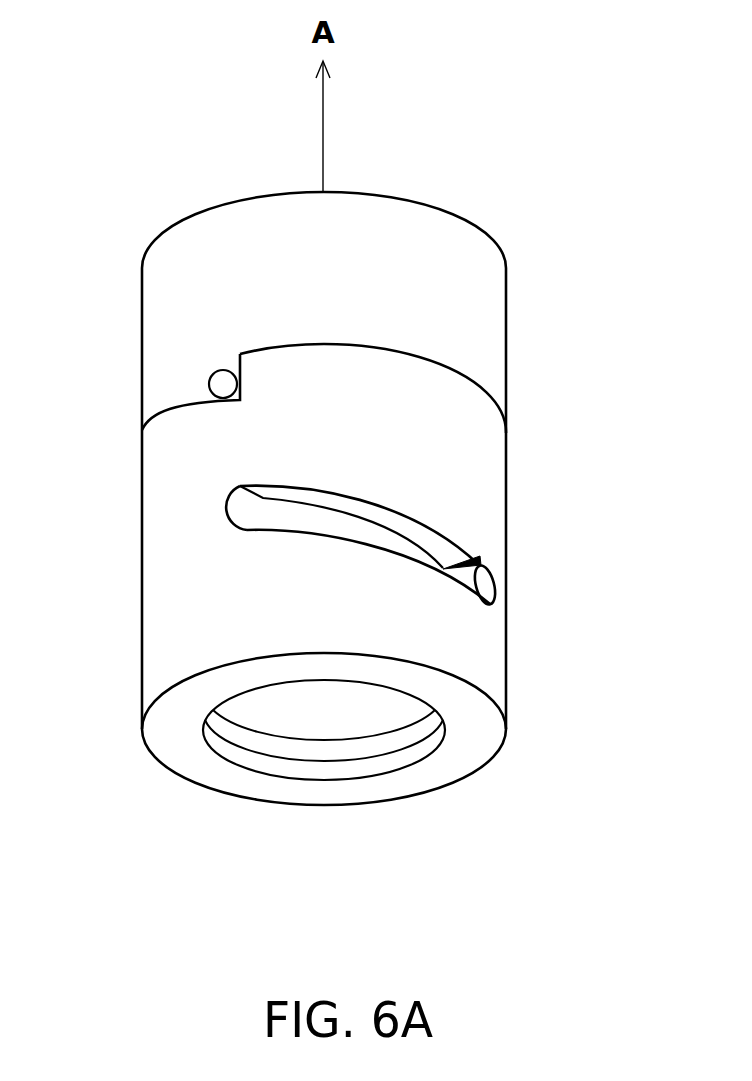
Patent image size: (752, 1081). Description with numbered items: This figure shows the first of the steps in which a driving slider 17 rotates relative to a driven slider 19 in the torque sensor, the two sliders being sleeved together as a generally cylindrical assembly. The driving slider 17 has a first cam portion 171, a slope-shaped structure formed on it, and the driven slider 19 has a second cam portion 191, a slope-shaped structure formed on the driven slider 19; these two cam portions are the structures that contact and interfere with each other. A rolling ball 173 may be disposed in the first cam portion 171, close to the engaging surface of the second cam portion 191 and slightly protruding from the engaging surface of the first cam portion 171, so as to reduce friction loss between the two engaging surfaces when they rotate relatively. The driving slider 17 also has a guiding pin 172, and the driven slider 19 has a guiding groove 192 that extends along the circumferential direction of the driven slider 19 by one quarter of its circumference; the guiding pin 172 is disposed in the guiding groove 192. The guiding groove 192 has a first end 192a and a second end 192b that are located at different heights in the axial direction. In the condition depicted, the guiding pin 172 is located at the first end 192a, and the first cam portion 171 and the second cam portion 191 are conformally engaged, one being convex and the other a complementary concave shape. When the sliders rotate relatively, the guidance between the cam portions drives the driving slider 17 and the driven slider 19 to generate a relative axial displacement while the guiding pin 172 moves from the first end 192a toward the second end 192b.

The driving slider 17 is at (487, 310).
The driven slider 19 is at (157, 497).
The first cam portion 171 is at (455, 374).
The guiding pin 172 is at (490, 587).
The rolling ball 173 is at (222, 368).
The second cam portion 191 is at (178, 396).
The guiding groove 192 is at (418, 549).
The first end 192a is at (504, 613).
The second end 192b is at (236, 515).